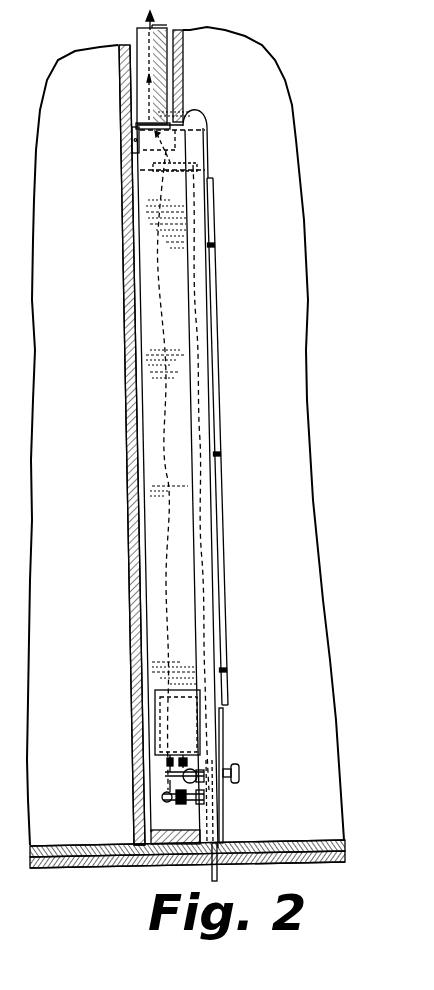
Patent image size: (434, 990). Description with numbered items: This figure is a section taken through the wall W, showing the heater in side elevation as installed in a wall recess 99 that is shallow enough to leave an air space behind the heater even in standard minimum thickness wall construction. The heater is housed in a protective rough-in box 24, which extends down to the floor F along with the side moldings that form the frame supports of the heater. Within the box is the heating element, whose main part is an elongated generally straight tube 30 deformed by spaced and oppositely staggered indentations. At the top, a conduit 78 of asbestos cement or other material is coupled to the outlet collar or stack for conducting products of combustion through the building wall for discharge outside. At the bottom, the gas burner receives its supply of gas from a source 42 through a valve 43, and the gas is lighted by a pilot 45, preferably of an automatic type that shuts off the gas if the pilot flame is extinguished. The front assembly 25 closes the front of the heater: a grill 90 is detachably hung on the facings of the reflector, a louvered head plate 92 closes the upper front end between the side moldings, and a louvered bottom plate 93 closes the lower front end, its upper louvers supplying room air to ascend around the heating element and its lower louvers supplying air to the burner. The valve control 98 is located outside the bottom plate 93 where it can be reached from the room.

The conduit 78 is at (168, 67).
The louvered head plate 92 is at (207, 126).
The protective rough-in box 24 is at (145, 272).
The tube 30 is at (198, 366).
The grill 90 is at (221, 444).
The wall recess 99 is at (143, 543).
The front assembly 25 is at (220, 601).
The wall W is at (133, 694).
The louvered bottom plate 93 is at (227, 736).
The valve 43 is at (182, 754).
The pilot 45 is at (165, 766).
The valve control 98 is at (238, 772).
The floor F is at (265, 843).
The source 42 is at (220, 874).